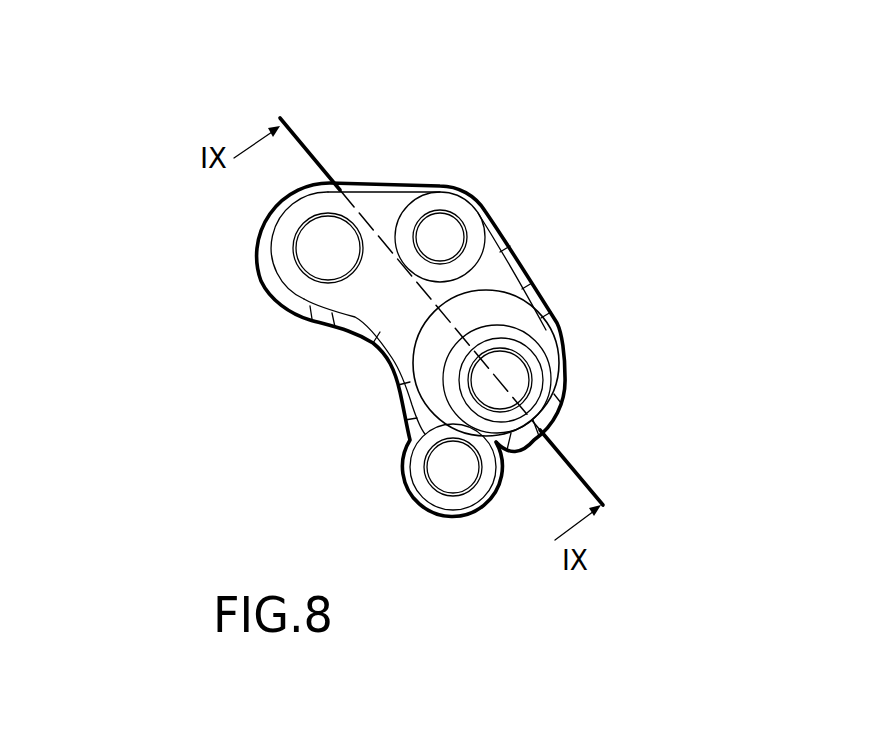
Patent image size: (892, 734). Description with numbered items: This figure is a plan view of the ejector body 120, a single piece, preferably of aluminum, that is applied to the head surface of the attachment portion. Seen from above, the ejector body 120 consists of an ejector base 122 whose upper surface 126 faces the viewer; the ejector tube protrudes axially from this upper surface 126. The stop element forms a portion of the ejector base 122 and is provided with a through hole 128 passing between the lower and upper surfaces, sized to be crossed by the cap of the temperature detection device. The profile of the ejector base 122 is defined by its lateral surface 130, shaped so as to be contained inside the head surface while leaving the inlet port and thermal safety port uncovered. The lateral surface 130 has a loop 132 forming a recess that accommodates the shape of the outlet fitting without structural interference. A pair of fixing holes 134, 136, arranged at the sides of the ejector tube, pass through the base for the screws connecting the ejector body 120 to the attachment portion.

The ejector body 120 is at (441, 334).
The ejector base 122 is at (253, 250).
The upper surface 126 is at (375, 214).
The through hole 128 is at (325, 250).
The lateral surface 130 is at (454, 516).
The loop 132 is at (398, 382).
The fixing hole 134 is at (438, 237).
The fixing hole 136 is at (452, 467).